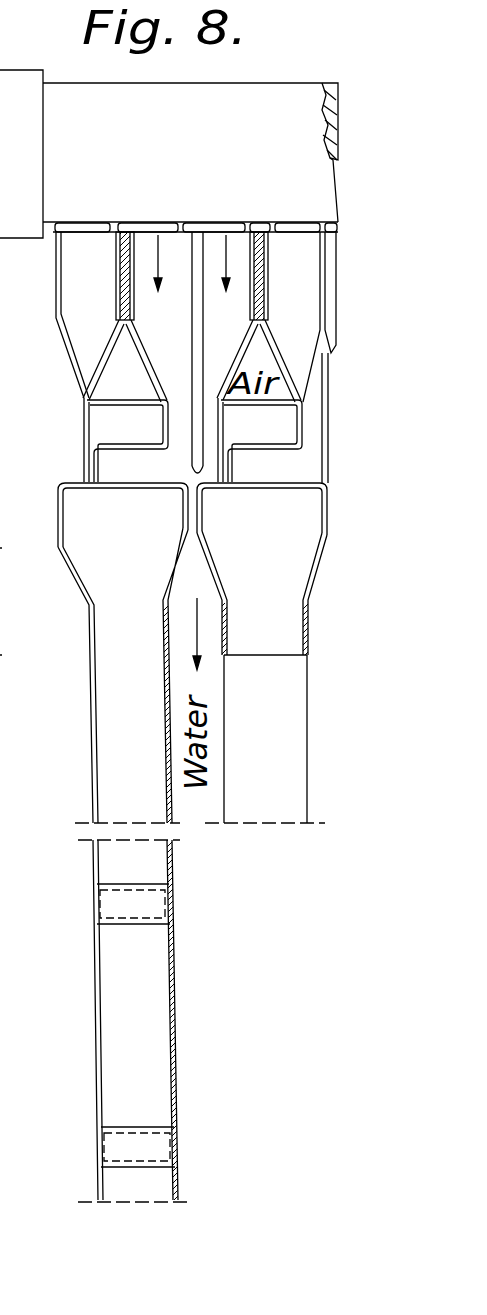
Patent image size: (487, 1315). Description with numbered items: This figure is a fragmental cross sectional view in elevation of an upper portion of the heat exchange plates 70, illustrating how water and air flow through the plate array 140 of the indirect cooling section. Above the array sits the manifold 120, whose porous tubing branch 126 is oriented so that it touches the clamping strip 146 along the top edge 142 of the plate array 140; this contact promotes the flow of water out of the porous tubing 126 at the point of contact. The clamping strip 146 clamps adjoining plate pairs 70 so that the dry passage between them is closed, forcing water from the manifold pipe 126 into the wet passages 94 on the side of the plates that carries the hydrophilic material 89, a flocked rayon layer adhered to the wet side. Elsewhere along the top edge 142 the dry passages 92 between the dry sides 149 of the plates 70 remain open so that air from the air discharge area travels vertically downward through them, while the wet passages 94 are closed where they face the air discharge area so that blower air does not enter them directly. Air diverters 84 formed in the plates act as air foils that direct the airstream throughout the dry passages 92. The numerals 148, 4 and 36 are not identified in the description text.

The porous tubing branch of manifold 126 is at (72, 108).
The manifold 120 is at (258, 82).
The clamping strip 146 is at (262, 228).
The top edge of plate array 142 is at (294, 228).
The conical air passage walls 148 is at (138, 355).
The dry sides of plates 149 is at (125, 363).
The heat exchange plates 70 is at (77, 382).
The dry passages 92 is at (96, 503).
The plate array 140 is at (42, 454).
The hydrophilic material 89 is at (90, 748).
The air diverter 84 is at (118, 908).
The wet passages 94 is at (212, 477).
The partial numeral 4 is at (6, 547).
The partial numeral 36 is at (15, 655).